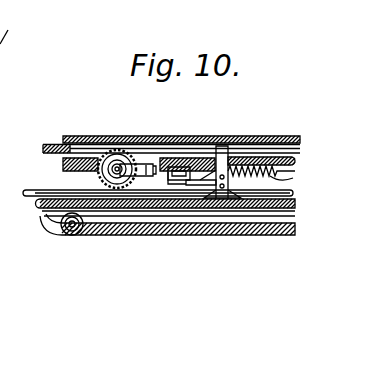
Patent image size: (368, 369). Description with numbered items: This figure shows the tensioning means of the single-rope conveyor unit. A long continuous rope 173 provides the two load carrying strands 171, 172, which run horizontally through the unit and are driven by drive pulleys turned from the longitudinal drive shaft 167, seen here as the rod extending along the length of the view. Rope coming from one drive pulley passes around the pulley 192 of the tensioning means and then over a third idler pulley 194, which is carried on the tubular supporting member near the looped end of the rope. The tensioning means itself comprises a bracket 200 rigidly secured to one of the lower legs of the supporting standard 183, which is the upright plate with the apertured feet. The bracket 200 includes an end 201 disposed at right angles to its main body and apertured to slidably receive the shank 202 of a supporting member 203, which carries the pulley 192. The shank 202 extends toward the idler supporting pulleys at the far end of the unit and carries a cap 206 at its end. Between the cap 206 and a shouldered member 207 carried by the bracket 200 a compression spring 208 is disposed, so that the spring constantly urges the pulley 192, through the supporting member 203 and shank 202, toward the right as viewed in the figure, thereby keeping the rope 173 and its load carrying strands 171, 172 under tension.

The load carrying strand 172 is at (84, 136).
The pulley 192 is at (116, 155).
The supporting member 203 is at (138, 163).
The shank 202 is at (164, 164).
The end 201 is at (179, 167).
The compression spring 208 is at (255, 163).
The cap 206 is at (303, 180).
The longitudinal drive shaft 167 is at (40, 190).
The load carrying strand 171 is at (52, 221).
The third idler pulley 194 is at (75, 228).
The rope 173 is at (138, 248).
The shouldered member 207 is at (184, 186).
The bracket 200 is at (199, 186).
The supporting standard 183 is at (229, 192).